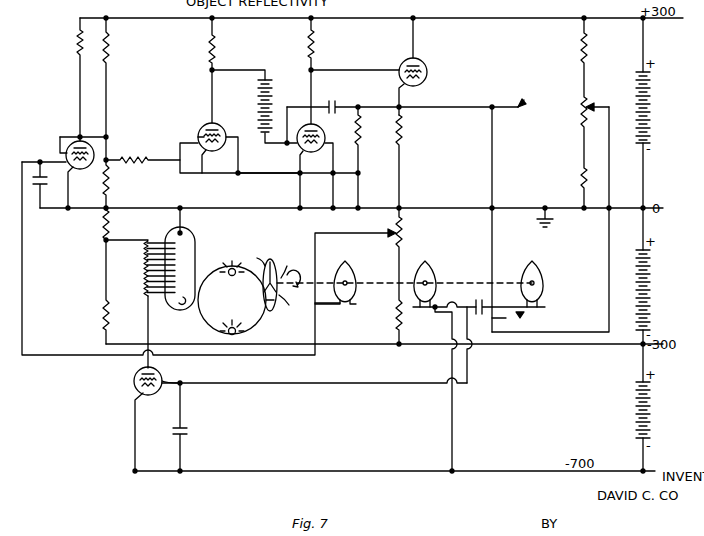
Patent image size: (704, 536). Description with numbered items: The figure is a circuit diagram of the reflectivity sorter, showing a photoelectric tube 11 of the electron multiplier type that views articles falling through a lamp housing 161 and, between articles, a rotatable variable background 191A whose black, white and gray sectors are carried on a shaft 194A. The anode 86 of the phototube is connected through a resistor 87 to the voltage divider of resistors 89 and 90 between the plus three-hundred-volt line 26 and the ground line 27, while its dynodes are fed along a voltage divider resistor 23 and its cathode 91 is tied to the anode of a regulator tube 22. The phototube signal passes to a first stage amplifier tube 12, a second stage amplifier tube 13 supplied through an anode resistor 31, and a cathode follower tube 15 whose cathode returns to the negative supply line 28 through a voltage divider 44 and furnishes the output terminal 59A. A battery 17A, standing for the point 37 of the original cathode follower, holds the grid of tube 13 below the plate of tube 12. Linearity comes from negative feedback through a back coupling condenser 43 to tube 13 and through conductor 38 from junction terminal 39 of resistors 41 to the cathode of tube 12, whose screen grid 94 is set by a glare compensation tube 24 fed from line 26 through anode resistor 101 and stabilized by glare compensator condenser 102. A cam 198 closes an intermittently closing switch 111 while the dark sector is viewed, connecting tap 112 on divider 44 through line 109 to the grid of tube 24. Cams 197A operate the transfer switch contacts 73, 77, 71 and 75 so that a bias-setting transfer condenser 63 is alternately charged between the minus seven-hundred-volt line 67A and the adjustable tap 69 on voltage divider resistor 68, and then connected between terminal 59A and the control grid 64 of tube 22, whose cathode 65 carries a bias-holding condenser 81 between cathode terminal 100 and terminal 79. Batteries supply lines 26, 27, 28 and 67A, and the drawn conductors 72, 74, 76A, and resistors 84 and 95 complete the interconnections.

The plus 300-volt line 26 is at (515, 18).
The junction terminal 39 is at (365, 167).
The negative 300-volt supply line 28 is at (545, 344).
The line of low potential 67A is at (478, 471).
The feedback conductor 76A is at (340, 383).
The line 109 is at (45, 362).
The anode resistor 101 is at (78, 49).
The resistor 89 is at (109, 50).
The resistor 90 is at (109, 187).
The resistor 84 is at (109, 226).
The glare-compensation tube 24 is at (84, 168).
The glare compensator condenser 102 is at (36, 190).
The resistor 87 is at (150, 152).
The cathode circuit 95 is at (269, 156).
The first stage amplifier tube 12 is at (206, 118).
The screen grid 94 is at (198, 136).
The junction terminal 37 is at (257, 136).
The battery 17A is at (287, 117).
The conductor 38 is at (260, 173).
The anode resistor 31 is at (313, 44).
The second stage amplifier tube 13 is at (319, 128).
The back coupling condenser 43 is at (333, 100).
The resistor 41 is at (361, 137).
The cathode follower tube 15 is at (427, 68).
The voltage divider 44 is at (403, 128).
The output terminal 59A is at (535, 95).
The conductor 72 is at (492, 170).
The voltage divider resistor 68 is at (582, 112).
The point of adjustable fixed potential 69 is at (592, 105).
The conductor 74 is at (609, 320).
The ground line 27 is at (565, 212).
The voltage divider resistor 23 is at (142, 275).
The photoelectric tube 11 is at (196, 260).
The anode 86 is at (186, 233).
The cathode 91 is at (178, 313).
The lamp housing 161 is at (222, 315).
The variable background 191A is at (274, 312).
The shaft 194A is at (370, 283).
The potential setting point 112 is at (386, 229).
The cam 198 is at (352, 262).
The intermittently closing switch 111 is at (335, 316).
The cams 197A is at (430, 263).
The contact 75 is at (446, 299).
The contact 77 is at (440, 313).
The bias-setting transfer condenser 63 is at (472, 316).
The contact 71 is at (512, 306).
The contact 73 is at (503, 325).
The regulator tube 22 is at (134, 385).
The control grid 64 is at (163, 377).
The cathode 65 is at (140, 398).
The bias-holding condenser 81 is at (188, 431).
The cathode terminal 100 is at (128, 478).
The cathode terminal 79 is at (182, 478).